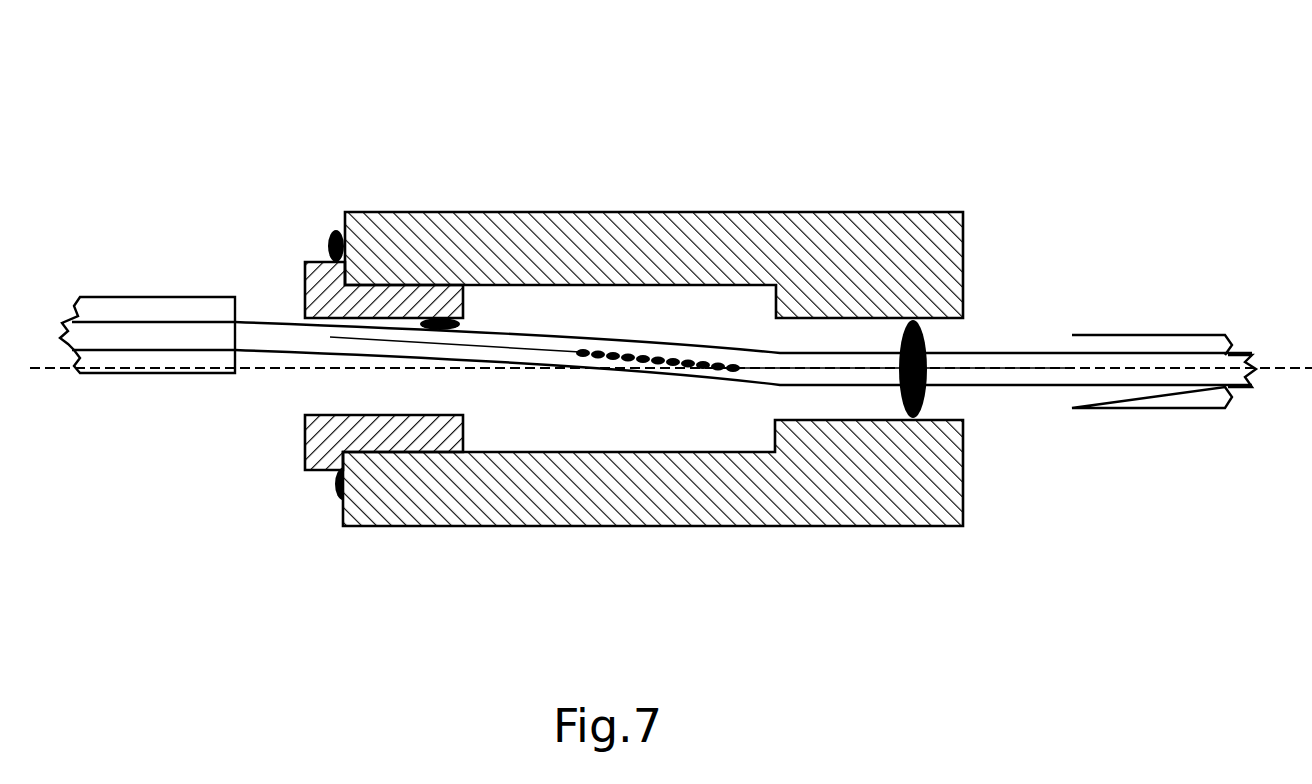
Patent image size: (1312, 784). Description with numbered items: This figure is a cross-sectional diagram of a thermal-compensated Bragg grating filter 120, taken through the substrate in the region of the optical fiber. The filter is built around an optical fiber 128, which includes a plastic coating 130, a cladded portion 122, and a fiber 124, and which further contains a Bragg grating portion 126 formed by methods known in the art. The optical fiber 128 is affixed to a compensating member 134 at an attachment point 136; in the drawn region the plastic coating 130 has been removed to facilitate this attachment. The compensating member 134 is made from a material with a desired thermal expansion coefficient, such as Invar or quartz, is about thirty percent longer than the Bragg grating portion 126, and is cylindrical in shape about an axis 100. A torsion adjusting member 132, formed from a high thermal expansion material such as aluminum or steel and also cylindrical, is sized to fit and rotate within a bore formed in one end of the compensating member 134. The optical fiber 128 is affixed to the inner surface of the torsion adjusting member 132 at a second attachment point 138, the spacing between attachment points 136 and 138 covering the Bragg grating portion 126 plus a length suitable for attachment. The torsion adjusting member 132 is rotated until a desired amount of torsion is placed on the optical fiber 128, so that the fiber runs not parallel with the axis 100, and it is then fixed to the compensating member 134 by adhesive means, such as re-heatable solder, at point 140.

The axis 100 is at (1283, 368).
The thermal-compensated Bragg grating filter 120 is at (160, 82).
The cladded portion 122 is at (500, 365).
The fiber 124 is at (550, 350).
The Bragg grating portion 126 is at (633, 370).
The optical fiber 128 is at (134, 347).
The plastic coating 130 is at (130, 297).
The torsion adjusting member 132 is at (305, 275).
The compensating member 134 is at (446, 212).
The attachment point 136 is at (925, 395).
The attachment point 138 is at (463, 318).
The point 140 is at (334, 232).